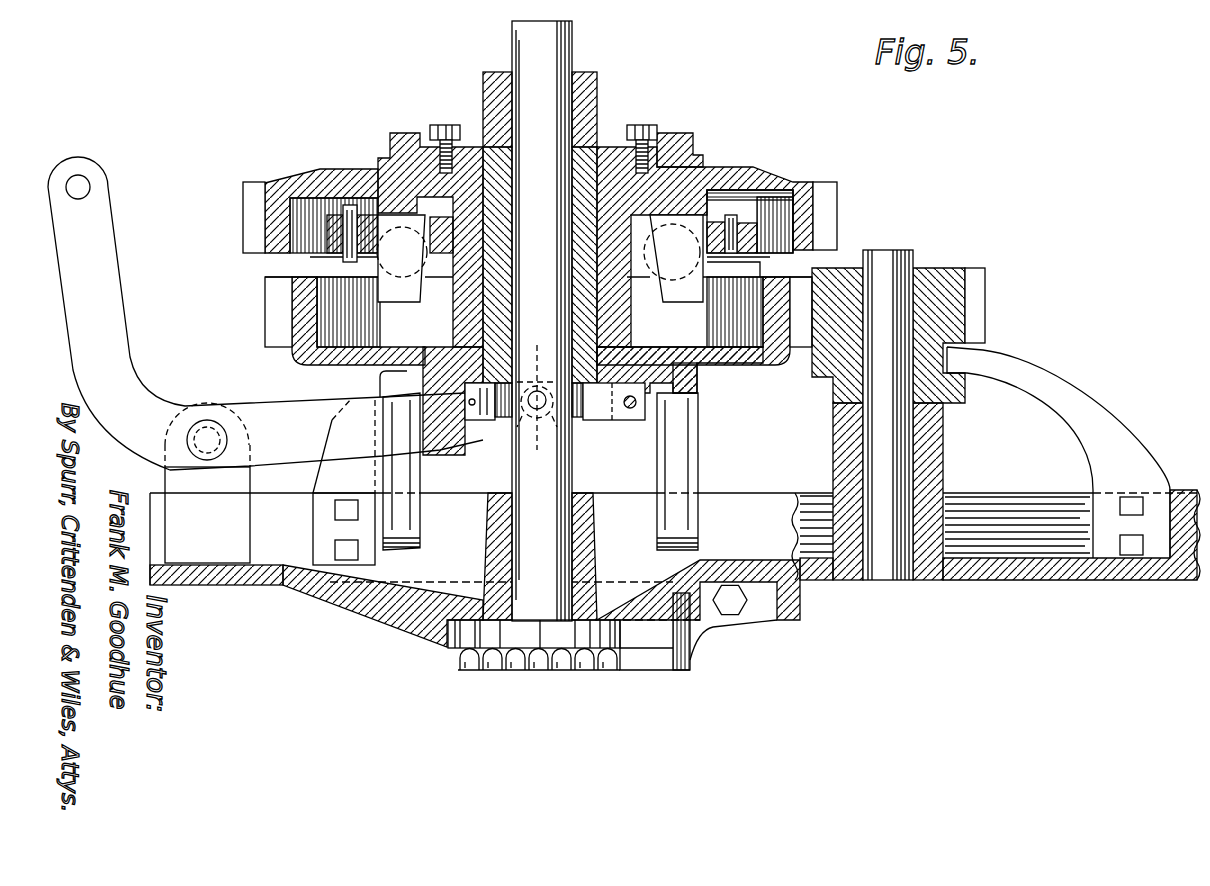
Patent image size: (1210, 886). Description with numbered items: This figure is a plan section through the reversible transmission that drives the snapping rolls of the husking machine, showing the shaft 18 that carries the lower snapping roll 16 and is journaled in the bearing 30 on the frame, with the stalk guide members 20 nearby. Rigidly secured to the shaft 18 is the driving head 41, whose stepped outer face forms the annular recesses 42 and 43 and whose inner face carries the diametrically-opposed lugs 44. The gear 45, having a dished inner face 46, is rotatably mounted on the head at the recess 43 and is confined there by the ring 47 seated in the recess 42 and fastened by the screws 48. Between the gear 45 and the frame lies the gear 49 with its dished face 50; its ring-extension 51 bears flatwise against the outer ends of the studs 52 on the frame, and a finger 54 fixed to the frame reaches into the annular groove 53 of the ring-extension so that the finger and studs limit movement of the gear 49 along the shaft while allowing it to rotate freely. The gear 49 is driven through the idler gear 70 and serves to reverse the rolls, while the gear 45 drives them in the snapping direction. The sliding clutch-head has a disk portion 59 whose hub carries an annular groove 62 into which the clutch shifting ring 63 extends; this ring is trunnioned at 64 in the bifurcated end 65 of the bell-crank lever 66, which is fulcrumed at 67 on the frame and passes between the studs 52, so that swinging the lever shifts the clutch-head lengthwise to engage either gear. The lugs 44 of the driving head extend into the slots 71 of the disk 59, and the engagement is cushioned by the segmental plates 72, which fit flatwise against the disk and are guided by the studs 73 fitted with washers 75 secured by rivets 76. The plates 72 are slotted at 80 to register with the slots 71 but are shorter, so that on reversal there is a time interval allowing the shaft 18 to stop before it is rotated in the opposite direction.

The lower snapping roll 16 is at (470, 657).
The shaft 18 is at (557, 44).
The guide members 20 is at (443, 640).
The bearing 30 is at (566, 553).
The driving head 41 is at (400, 183).
The annular recess 42 is at (612, 153).
The annular recess 43 is at (680, 162).
The lugs 44 is at (415, 302).
The gear 45 is at (297, 183).
The dished inner face 46 is at (265, 197).
The ring 47 is at (682, 133).
The screws 48 is at (438, 132).
The gear 49 is at (760, 362).
The dished face 50 is at (750, 370).
The ring-extension 51 is at (703, 388).
The studs 52 is at (392, 410).
The annular groove 53 is at (700, 382).
The finger 54 is at (366, 390).
The disk portion 59 is at (755, 200).
The annular groove 62 is at (497, 423).
The clutch shifting ring 63 is at (600, 415).
The trunnions 64 is at (538, 384).
The bifurcated end 65 is at (500, 440).
The bell-crank lever 66 is at (100, 230).
The fulcrum 67 is at (207, 440).
The idler gear 70 is at (970, 292).
The slots 71 is at (348, 256).
The segmental plates 72 is at (290, 240).
The guide studs 73 is at (713, 263).
The washers 75 is at (317, 257).
The rivets 76 is at (350, 208).
The slots 80 is at (430, 276).